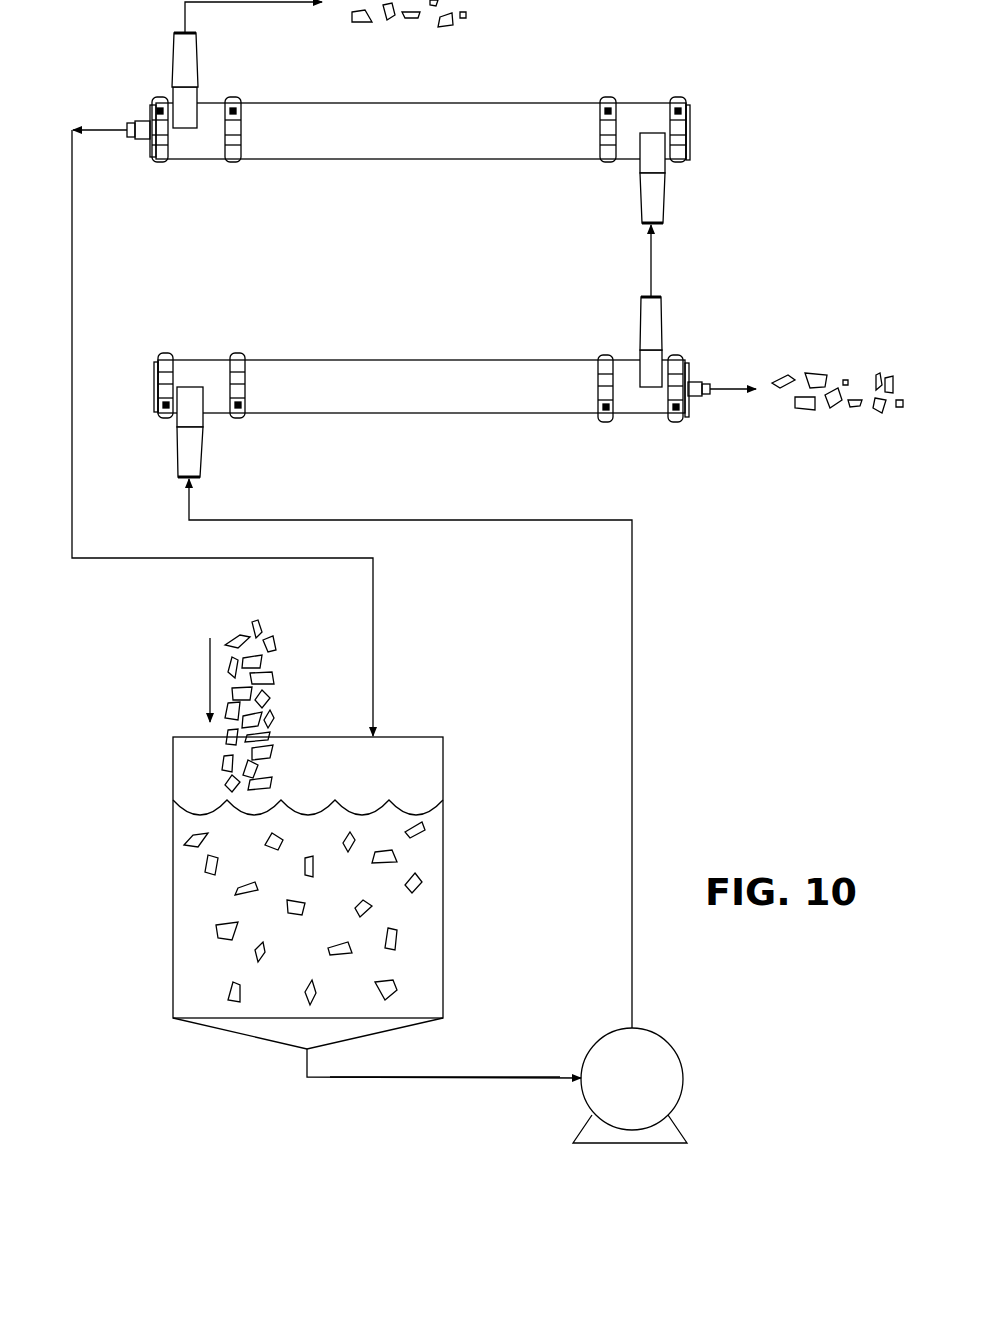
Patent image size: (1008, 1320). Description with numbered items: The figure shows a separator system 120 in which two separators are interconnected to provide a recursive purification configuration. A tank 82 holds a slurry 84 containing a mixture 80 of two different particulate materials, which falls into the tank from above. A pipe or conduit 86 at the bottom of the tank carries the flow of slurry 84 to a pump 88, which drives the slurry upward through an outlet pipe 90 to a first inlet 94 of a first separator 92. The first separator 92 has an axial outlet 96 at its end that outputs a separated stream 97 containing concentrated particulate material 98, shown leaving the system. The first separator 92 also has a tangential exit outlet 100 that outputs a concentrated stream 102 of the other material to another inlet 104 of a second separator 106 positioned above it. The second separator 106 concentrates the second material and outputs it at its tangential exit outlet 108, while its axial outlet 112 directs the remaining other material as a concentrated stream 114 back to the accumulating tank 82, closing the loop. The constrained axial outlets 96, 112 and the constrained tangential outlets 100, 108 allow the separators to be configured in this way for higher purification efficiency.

The mixture 80 is at (239, 684).
The tank 82 is at (173, 888).
The slurry 84 is at (238, 962).
The pipe or conduit 86 is at (420, 1078).
The pump 88 is at (680, 1128).
The outlet pipe 90 is at (632, 748).
The first separator 92 is at (438, 398).
The first inlet 94 is at (203, 448).
The axial outlet 96 is at (698, 380).
The separated stream 97 is at (738, 388).
The concentrated particulate material 98 is at (837, 369).
The tangential exit outlet 100 is at (640, 320).
The concentrated stream 102 is at (651, 265).
The inlet 104 is at (640, 200).
The second separator 106 is at (443, 143).
The tangential exit outlet 108 is at (198, 62).
The axial outlet 112 is at (138, 120).
The concentrated stream 114 is at (72, 252).
The separator system 120 is at (769, 30).